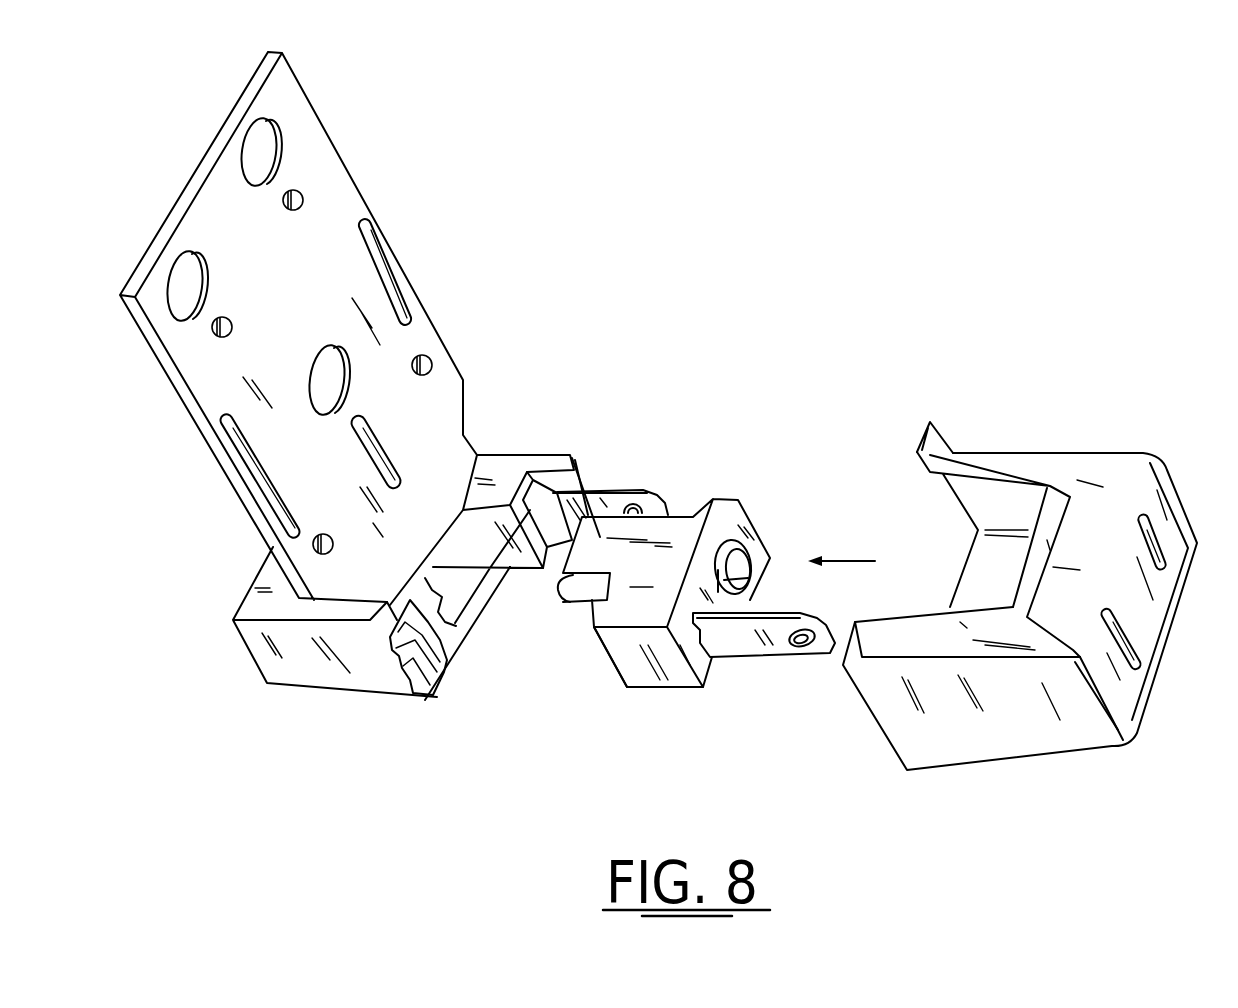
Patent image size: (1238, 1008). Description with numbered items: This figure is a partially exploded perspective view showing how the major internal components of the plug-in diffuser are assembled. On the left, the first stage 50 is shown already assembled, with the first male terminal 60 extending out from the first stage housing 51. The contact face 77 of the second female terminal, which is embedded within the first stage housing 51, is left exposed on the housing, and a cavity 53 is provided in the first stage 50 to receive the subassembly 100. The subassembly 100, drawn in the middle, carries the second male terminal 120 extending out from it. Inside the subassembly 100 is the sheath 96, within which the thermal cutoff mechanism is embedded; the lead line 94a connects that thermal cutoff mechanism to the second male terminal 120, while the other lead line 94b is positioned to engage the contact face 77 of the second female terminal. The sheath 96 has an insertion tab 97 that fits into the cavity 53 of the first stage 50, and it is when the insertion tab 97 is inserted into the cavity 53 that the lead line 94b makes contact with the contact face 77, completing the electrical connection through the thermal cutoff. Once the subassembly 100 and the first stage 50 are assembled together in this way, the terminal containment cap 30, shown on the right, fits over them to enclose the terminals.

The terminal containment cap 30 is at (1080, 450).
The first stage 50 is at (381, 221).
The first stage housing 51 is at (267, 684).
The cavity 53 is at (455, 588).
The first male terminal 60 is at (620, 486).
The contact face 77 is at (423, 660).
The lead line 94a is at (726, 568).
The lead line 94b is at (567, 602).
The sheath 96 is at (667, 670).
The insertion tab 97 is at (572, 458).
The subassembly 100 is at (724, 481).
The second male terminal 120 is at (753, 647).